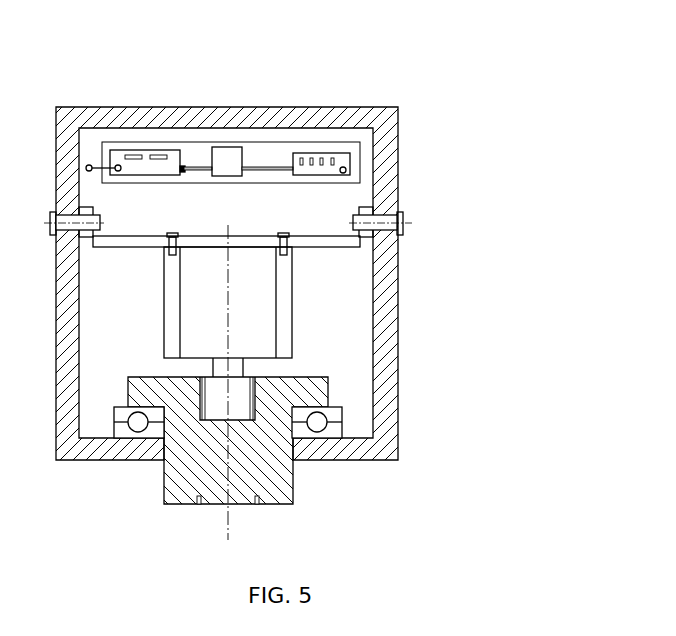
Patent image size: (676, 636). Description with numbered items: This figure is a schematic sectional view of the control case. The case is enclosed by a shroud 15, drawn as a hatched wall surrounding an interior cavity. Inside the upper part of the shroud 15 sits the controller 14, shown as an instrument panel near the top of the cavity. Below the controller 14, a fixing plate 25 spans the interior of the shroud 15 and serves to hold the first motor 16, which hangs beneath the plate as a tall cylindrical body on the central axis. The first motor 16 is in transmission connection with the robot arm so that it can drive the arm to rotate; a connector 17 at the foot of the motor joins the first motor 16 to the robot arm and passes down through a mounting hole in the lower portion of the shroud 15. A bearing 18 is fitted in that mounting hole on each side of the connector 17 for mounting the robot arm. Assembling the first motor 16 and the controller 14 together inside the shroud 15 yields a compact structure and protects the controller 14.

The controller 14 is at (280, 155).
The shroud 15 is at (387, 115).
The fixing plate 25 is at (348, 242).
The first motor 16 is at (262, 288).
The connector 17 is at (318, 397).
The bearing 18 is at (335, 431).